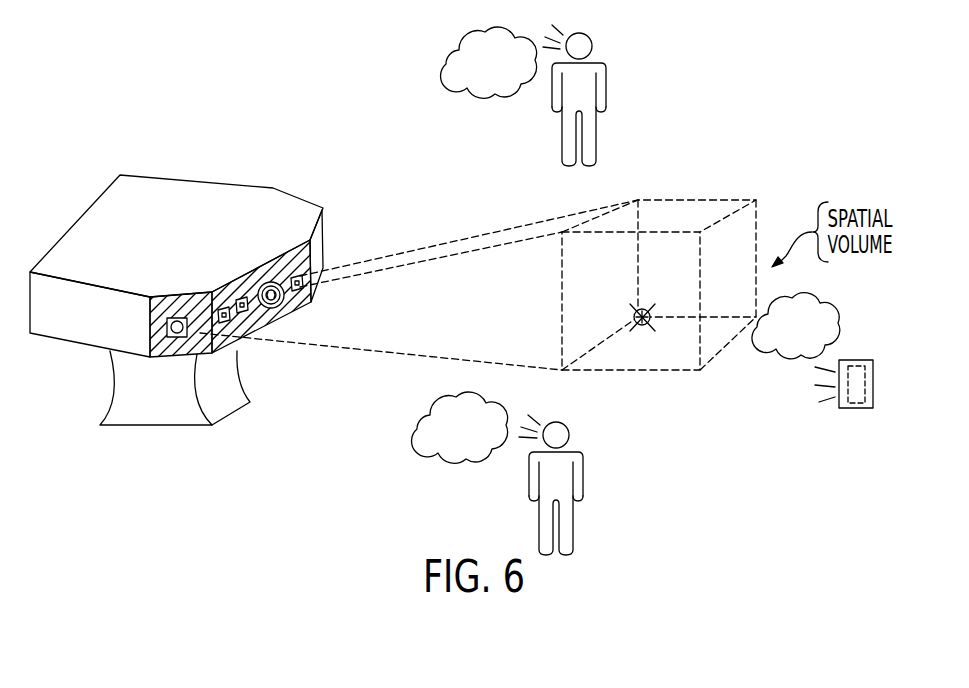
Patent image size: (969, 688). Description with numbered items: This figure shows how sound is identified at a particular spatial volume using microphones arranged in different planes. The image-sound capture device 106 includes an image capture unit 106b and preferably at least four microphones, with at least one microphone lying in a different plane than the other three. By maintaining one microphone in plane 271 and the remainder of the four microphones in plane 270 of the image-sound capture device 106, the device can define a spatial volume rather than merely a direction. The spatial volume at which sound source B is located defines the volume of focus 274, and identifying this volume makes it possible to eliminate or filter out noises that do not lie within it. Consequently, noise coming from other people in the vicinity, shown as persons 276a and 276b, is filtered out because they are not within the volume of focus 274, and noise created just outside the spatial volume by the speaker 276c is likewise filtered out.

The image-sound capture device 106 is at (240, 185).
The plane 270 is at (310, 223).
The plane 271 is at (165, 305).
The image capture unit 106b is at (283, 306).
The volume of focus 274 is at (732, 199).
The other person 276a is at (638, 98).
The other person 276b is at (624, 487).
The speaker 276c is at (856, 434).